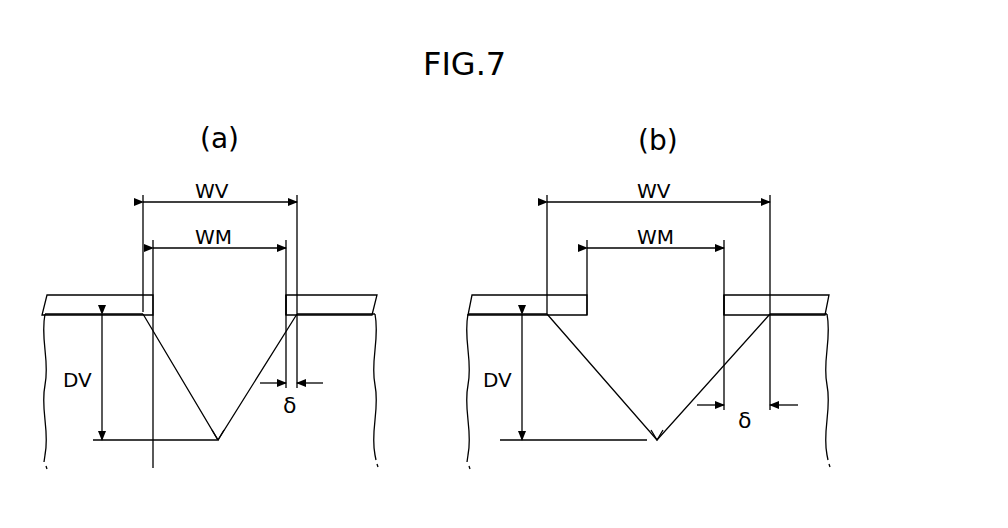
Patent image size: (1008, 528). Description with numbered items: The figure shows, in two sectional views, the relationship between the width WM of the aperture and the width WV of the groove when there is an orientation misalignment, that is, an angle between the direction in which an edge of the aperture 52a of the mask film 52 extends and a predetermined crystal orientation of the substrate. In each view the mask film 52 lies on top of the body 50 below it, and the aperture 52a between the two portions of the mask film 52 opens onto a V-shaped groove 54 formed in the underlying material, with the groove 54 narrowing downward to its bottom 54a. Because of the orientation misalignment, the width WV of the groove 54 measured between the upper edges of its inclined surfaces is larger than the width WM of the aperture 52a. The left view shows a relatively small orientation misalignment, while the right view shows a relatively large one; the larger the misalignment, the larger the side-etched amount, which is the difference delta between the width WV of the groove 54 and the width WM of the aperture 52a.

The substrate 50 is at (338, 345).
The mask film 52 is at (350, 305).
The aperture 52a is at (283, 302).
The V-shaped groove 54 is at (188, 378).
The groove bottom 54a is at (240, 405).